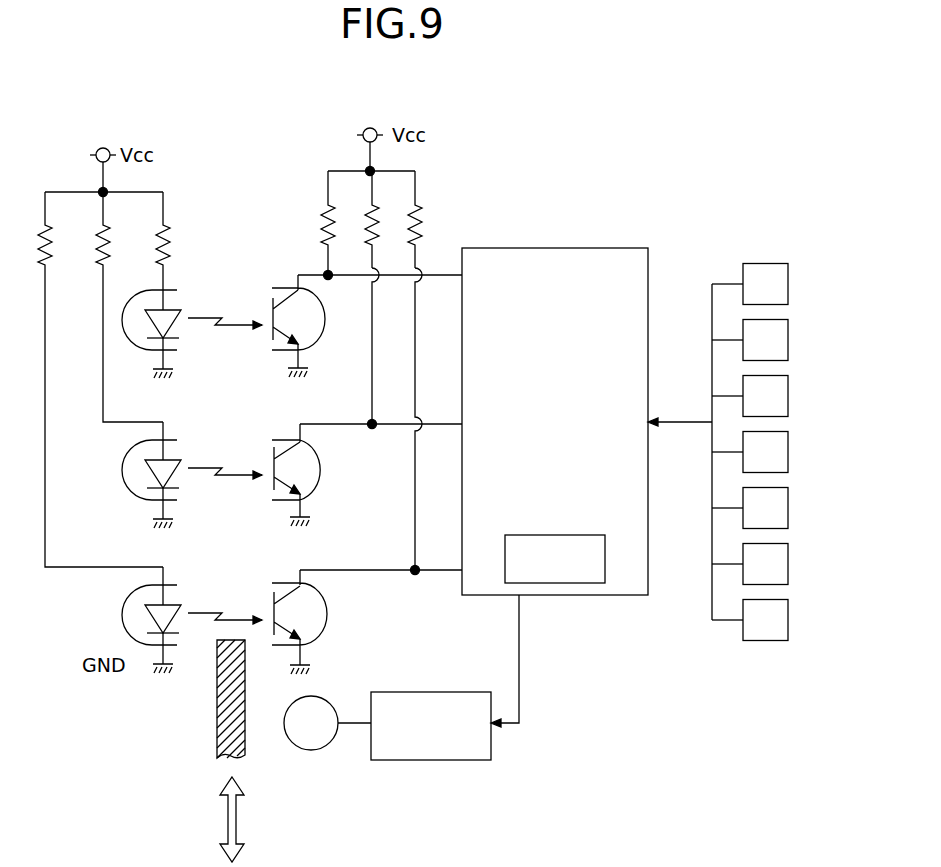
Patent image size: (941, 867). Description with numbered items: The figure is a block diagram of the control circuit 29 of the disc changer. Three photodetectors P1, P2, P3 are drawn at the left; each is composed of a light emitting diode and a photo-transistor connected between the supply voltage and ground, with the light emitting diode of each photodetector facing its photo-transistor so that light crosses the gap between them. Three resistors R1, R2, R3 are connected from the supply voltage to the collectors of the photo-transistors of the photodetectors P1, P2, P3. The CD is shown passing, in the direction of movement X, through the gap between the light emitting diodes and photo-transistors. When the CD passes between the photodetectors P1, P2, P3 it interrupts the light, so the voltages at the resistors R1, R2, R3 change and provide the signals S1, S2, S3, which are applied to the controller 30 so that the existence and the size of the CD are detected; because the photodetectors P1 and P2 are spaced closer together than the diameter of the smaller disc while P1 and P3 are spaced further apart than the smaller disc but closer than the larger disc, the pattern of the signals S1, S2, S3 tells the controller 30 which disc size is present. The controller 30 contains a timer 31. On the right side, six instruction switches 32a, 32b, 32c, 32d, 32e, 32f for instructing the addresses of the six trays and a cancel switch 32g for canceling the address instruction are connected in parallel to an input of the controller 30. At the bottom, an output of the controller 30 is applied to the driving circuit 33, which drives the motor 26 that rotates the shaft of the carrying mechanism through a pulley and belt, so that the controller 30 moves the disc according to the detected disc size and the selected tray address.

The motor 26 is at (323, 750).
The control circuit 29 is at (590, 206).
The controller 30 is at (537, 248).
The timer 31 is at (578, 581).
The instruction switch 32a is at (788, 282).
The instruction switch 32b is at (788, 338).
The instruction switch 32c is at (788, 394).
The instruction switch 32d is at (788, 450).
The instruction switch 32e is at (788, 506).
The instruction switch 32f is at (788, 562).
The cancel switch 32g is at (788, 618).
The driving circuit 33 is at (432, 760).
The photodetector P1 is at (324, 630).
The photodetector P2 is at (324, 485).
The photodetector P3 is at (322, 335).
The resistor R1 is at (429, 373).
The resistor R2 is at (384, 300).
The resistor R3 is at (310, 225).
The signal S1 is at (440, 572).
The signal S2 is at (440, 426).
The signal S3 is at (437, 277).
The element CD is at (217, 726).
The disc movement direction X is at (236, 822).